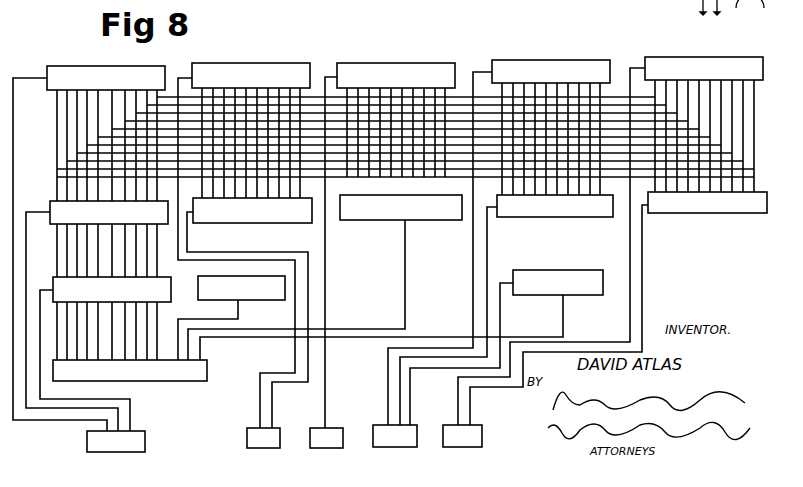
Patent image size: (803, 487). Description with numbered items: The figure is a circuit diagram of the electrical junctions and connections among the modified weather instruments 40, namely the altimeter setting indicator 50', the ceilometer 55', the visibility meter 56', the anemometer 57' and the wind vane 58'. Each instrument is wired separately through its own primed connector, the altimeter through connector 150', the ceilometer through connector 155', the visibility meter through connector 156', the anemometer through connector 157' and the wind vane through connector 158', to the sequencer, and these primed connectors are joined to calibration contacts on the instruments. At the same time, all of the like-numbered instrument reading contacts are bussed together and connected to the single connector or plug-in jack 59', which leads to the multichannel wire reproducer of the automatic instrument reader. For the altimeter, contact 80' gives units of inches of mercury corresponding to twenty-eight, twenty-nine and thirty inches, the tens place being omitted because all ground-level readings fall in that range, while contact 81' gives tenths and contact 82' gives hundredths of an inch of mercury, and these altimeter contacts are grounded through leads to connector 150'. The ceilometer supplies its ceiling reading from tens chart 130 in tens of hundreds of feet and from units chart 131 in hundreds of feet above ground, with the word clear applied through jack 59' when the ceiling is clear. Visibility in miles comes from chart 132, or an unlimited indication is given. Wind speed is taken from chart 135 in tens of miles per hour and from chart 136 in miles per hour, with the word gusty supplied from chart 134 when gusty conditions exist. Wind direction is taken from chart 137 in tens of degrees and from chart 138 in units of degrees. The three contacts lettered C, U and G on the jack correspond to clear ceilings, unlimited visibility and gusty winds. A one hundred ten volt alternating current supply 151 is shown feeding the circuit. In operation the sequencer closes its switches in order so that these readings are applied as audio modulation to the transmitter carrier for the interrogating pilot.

The altimeter setting indicator 50' is at (106, 110).
The ceilometer 55' is at (255, 42).
The visibility meter 56' is at (407, 41).
The anemometer 57' is at (539, 38).
The wind vane 58' is at (715, 38).
The altimeter units contact 80' is at (60, 237).
The altimeter tenths contact 81' is at (94, 307).
The altimeter hundredths contact 82' is at (99, 345).
The connector jack 59' is at (145, 379).
The ceilometer tens chart 130 is at (308, 60).
The ceilometer units chart 131 is at (248, 228).
The visibility instrument chart 132 is at (453, 60).
The gusty chart 134 is at (578, 298).
The wind speed tens chart 135 is at (610, 58).
The wind speed units chart 136 is at (556, 220).
The wind direction tens chart 137 is at (763, 78).
The wind direction units chart 138 is at (708, 216).
The modified weather instruments 40 is at (660, 270).
The altimeter connector 150' is at (112, 447).
The power supply 110 AC 151 is at (704, 18).
The ceilometer connector 155' is at (251, 445).
The visibility meter connector 156' is at (311, 445).
The anemometer connector 157' is at (381, 443).
The wind vane connector 158' is at (481, 443).